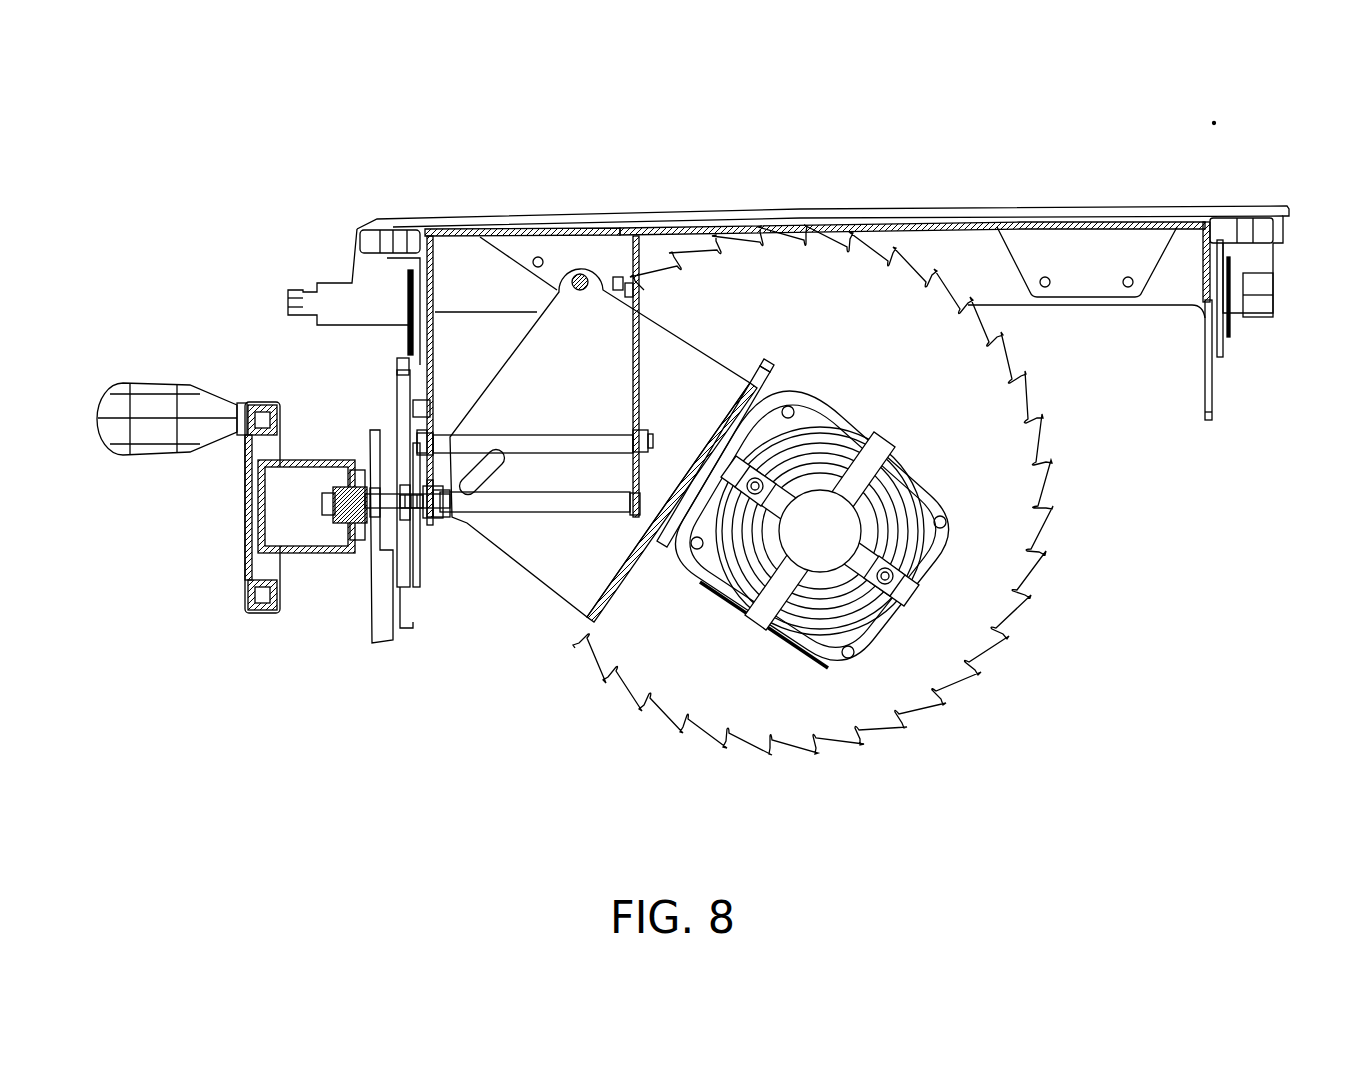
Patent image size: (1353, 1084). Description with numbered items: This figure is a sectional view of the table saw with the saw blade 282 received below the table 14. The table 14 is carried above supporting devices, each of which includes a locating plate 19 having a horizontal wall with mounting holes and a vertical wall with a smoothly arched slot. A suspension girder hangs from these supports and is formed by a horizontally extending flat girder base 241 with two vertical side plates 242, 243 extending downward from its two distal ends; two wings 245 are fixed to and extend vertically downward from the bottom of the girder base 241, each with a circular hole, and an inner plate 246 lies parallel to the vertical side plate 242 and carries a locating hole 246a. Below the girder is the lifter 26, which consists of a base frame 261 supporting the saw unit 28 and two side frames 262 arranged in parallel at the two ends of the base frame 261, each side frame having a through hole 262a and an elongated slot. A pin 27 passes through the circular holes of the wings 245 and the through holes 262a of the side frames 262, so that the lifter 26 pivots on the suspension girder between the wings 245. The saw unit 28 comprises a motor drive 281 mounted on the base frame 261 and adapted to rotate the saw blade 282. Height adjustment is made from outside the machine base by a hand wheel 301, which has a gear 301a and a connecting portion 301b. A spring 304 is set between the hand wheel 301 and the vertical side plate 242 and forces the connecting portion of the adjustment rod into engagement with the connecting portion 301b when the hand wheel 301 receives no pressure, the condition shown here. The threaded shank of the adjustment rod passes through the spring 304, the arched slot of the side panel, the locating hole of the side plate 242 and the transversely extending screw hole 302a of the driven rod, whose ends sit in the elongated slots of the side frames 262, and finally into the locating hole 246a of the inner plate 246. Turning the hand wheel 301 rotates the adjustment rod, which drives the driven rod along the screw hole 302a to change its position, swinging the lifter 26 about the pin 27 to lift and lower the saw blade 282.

The table 14 is at (1048, 214).
The locating plate 19 is at (392, 232).
The pin 27 is at (636, 236).
The horizontally extending flat girder base 241 is at (965, 232).
The vertical side plate 242 is at (473, 240).
The vertical side plate 243 is at (1211, 385).
The wing 245 is at (536, 256).
The inner plate 246 is at (638, 365).
The locating hole 246a is at (638, 470).
The lifter 26 is at (596, 463).
The base frame 261 is at (620, 548).
The side frame 262 is at (550, 567).
The through hole 262a is at (581, 274).
The saw unit 28 is at (803, 616).
The motor drive 281 is at (867, 648).
The saw blade 282 is at (788, 703).
The hand wheel 301 is at (247, 588).
The gear 301a is at (367, 470).
The connecting portion 301b is at (337, 513).
The transversely extending screw hole 302a is at (463, 522).
The spring 304 is at (373, 645).